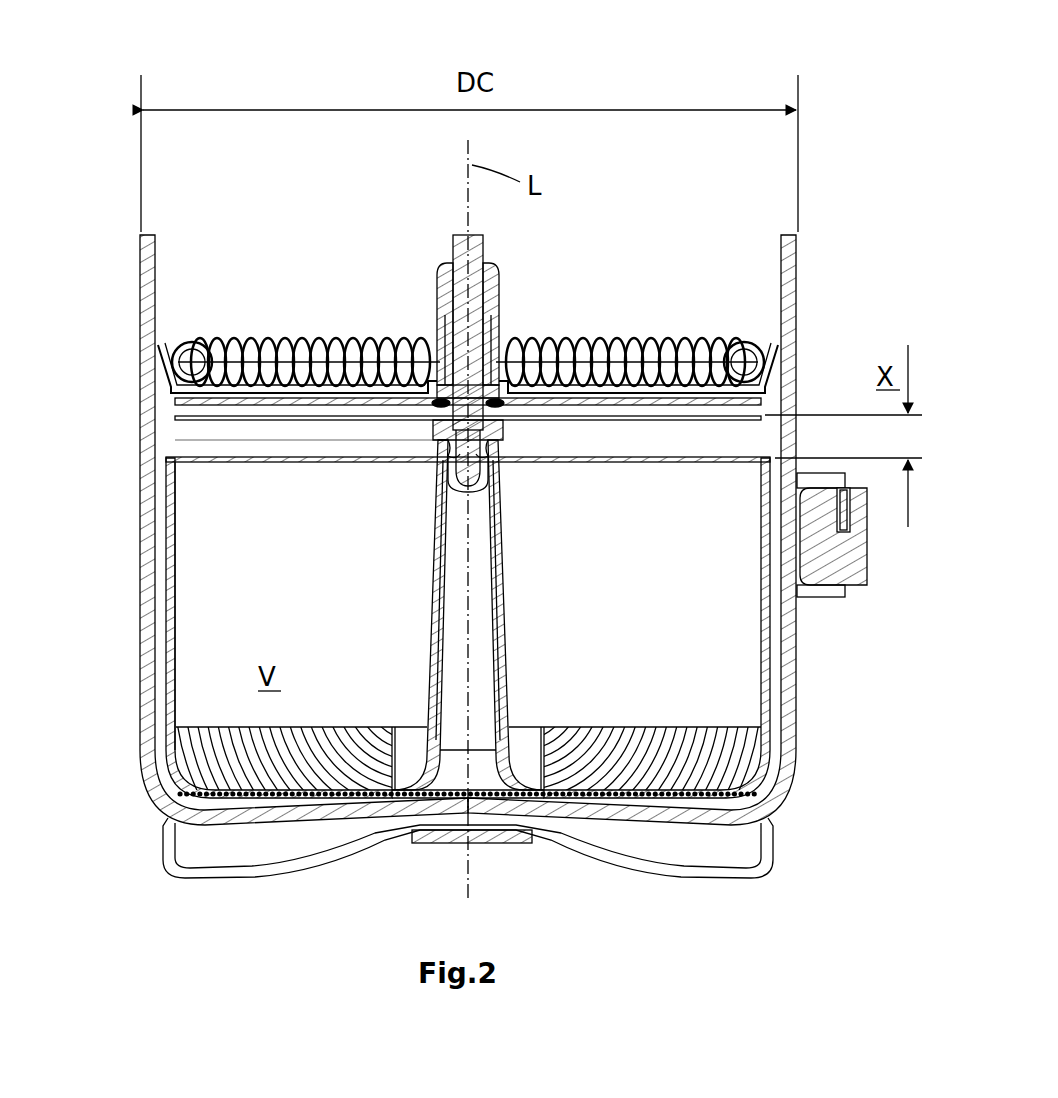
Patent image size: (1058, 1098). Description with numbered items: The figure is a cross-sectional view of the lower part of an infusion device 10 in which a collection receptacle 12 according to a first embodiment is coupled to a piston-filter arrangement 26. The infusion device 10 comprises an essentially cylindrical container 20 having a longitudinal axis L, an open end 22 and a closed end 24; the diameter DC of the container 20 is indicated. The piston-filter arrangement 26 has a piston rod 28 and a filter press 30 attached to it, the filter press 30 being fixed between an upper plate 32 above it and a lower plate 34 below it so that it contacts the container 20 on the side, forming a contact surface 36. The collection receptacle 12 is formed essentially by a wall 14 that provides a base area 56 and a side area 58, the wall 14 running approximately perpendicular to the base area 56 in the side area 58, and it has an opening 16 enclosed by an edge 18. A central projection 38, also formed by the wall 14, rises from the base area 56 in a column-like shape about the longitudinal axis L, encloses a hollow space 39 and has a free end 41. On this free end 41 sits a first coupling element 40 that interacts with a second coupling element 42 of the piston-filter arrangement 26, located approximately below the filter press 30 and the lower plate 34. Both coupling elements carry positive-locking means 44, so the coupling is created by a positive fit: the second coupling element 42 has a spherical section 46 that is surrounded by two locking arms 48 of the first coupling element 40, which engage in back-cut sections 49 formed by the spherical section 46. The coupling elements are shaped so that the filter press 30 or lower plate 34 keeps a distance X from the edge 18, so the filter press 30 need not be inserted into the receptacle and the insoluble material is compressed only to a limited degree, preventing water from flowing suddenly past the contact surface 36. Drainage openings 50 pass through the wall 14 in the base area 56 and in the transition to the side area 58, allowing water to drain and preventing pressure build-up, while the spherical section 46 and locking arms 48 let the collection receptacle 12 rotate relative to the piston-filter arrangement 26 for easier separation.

The infusion device 10 is at (113, 100).
The collection receptacle 12 is at (168, 540).
The wall 14 is at (511, 622).
The opening 16 is at (195, 452).
The edge 18 is at (168, 465).
The container 20 is at (140, 285).
The open end 22 is at (731, 231).
The closed end 24 is at (633, 853).
The piston-filter arrangement 26 is at (455, 262).
The piston rod 28 is at (468, 360).
The filter press 30 is at (208, 318).
The upper plate 32 is at (302, 401).
The lower plate 34 is at (243, 418).
The contact surface 36 is at (160, 353).
The projection 38 is at (468, 615).
The hollow space 39 is at (487, 683).
The first coupling element 40 is at (502, 435).
The free end 41 is at (434, 450).
The second coupling element 42 is at (502, 470).
The positive-locking means 44 is at (468, 430).
The spherical section 46 is at (468, 474).
The locking arm 48 is at (436, 441).
The back-cut sections 49 is at (510, 382).
The drainage opening 50 is at (341, 735).
The base area 56 is at (341, 796).
The side area 58 is at (177, 593).